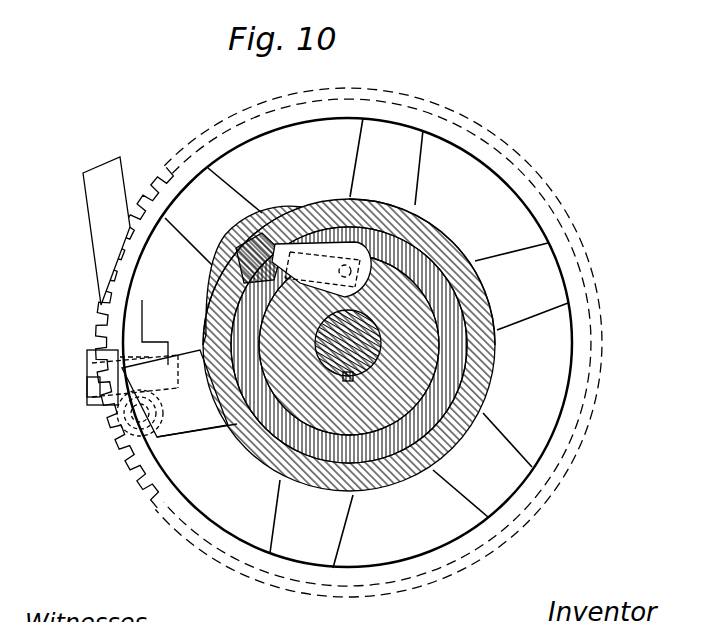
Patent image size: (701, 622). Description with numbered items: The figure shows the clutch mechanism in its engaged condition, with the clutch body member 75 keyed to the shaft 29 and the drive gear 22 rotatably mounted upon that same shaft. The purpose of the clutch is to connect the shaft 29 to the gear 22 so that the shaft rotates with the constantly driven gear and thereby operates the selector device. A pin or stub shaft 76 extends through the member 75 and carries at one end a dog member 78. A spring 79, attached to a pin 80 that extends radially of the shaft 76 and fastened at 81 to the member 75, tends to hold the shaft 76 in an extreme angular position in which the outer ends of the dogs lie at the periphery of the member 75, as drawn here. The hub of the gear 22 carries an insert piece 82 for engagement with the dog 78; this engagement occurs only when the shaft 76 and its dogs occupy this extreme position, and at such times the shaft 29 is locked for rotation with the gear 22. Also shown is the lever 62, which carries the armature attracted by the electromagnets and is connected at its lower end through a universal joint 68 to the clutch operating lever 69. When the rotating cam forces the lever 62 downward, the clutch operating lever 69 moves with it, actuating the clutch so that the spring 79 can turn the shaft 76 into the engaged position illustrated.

The drive gear 22 is at (140, 470).
The lever 62 is at (95, 210).
The universal joint 68 is at (88, 381).
The clutch operating lever 69 is at (190, 418).
The insert piece 82 is at (276, 232).
The dog member 78 is at (301, 226).
The pin 80 is at (372, 240).
The spring 79 is at (424, 228).
The pin or stub shaft 76 is at (440, 240).
The fastening point 81 is at (466, 255).
The clutch body member 75 is at (440, 347).
The shaft 29 is at (374, 347).